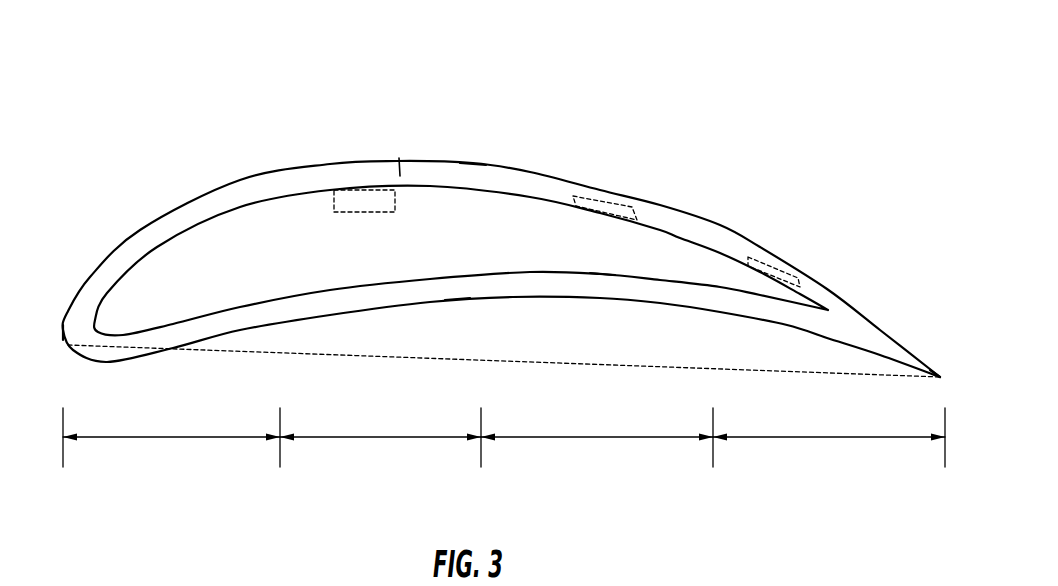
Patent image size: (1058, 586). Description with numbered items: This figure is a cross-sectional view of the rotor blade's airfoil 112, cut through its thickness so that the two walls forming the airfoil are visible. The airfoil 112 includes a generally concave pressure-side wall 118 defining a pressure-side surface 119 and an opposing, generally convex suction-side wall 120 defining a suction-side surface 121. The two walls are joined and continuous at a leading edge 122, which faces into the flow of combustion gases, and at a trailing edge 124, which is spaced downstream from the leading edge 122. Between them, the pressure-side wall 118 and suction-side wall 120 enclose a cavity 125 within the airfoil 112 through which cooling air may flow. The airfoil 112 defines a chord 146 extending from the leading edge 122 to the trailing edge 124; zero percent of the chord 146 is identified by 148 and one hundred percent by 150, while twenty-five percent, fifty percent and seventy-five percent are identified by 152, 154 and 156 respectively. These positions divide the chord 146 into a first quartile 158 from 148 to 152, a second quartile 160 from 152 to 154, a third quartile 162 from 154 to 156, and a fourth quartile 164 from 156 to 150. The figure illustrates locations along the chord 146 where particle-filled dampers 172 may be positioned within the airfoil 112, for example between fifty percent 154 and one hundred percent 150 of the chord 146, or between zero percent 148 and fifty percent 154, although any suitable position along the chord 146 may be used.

The airfoil 112 is at (154, 97).
The pressure-side wall 118 is at (602, 288).
The pressure-side surface 119 is at (458, 300).
The suction-side wall 120 is at (401, 158).
The suction-side surface 121 is at (473, 162).
The leading edge 122 is at (70, 345).
The trailing edge 124 is at (943, 373).
The cavity 125 is at (185, 270).
The chord 146 is at (530, 363).
The zero percent of the chord 148 is at (63, 448).
The one hundred percent of the chord 150 is at (943, 450).
The twenty-five percent of the chord 152 is at (280, 452).
The fifty percent of the chord 154 is at (482, 452).
The seventy-five percent of the chord 156 is at (713, 450).
The first quartile 158 is at (165, 438).
The second quartile 160 is at (387, 438).
The third quartile 162 is at (617, 438).
The fourth quartile 164 is at (848, 438).
The particle-filled damper 172 is at (365, 203).